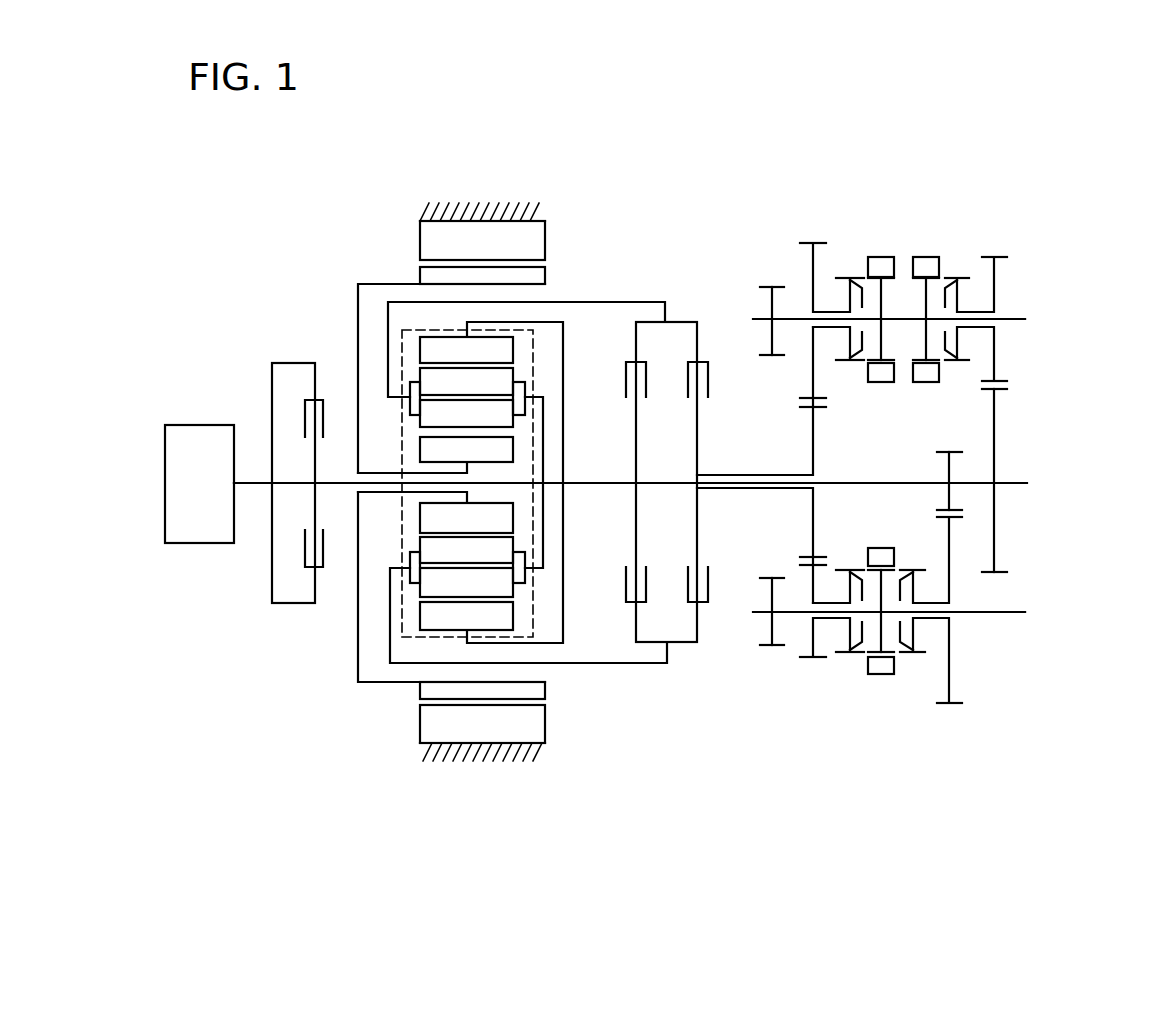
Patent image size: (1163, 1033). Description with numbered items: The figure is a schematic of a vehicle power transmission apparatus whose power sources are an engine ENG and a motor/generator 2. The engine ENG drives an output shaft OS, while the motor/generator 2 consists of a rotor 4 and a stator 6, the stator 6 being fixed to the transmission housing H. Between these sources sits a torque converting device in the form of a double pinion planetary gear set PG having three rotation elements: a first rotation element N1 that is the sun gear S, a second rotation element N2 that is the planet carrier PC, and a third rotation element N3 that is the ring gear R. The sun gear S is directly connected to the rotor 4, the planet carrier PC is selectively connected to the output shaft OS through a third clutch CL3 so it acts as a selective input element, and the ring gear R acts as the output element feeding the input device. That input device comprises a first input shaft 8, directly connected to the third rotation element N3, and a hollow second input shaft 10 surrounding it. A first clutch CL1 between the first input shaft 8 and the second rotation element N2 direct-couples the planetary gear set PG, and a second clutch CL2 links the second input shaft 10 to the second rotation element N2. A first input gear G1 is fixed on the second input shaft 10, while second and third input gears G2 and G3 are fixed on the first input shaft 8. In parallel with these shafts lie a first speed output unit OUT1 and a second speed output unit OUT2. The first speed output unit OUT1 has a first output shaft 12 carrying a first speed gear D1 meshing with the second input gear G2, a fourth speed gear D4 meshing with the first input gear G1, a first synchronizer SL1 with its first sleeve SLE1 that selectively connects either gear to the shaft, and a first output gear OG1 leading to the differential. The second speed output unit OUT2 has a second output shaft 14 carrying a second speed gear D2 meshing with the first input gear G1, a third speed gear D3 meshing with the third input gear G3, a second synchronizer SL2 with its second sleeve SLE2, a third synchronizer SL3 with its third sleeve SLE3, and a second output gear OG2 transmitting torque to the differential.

The engine ENG is at (199, 484).
The output shaft OS is at (250, 482).
The third clutch CL3 is at (297, 483).
The planetary gear set PG is at (489, 457).
The ring gear R is at (491, 482).
The third rotation element N3 is at (491, 482).
The sun gear S is at (466, 484).
The first rotation element N1 is at (466, 484).
The planet carrier PC is at (527, 482).
The second rotation element N2 is at (527, 482).
The transmission housing H is at (515, 202).
The motor/generator 2 is at (521, 482).
The rotor 4 is at (506, 480).
The stator 6 is at (577, 240).
The first clutch CL1 is at (642, 482).
The second clutch CL2 is at (718, 482).
The second input shaft 10 is at (756, 473).
The first input shaft 8 is at (722, 520).
The first input gear G1 is at (838, 437).
The second input gear G2 is at (944, 462).
The third input gear G3 is at (1025, 437).
The second output gear OG2 is at (760, 300).
The first output gear OG1 is at (768, 628).
The first speed gear D1 is at (979, 638).
The second speed gear D2 is at (812, 252).
The third speed gear D3 is at (1022, 262).
The fourth speed gear D4 is at (812, 644).
The first sleeve SLE1 is at (884, 690).
The second sleeve SLE2 is at (883, 248).
The third sleeve SLE3 is at (931, 248).
The first synchronizer SL1 is at (924, 715).
The second synchronizer SL2 is at (837, 231).
The third synchronizer SL3 is at (978, 227).
The second output shaft 14 is at (1030, 372).
The first output shaft 12 is at (1015, 610).
The first speed output unit OUT1 is at (1077, 715).
The second speed output unit OUT2 is at (1077, 400).